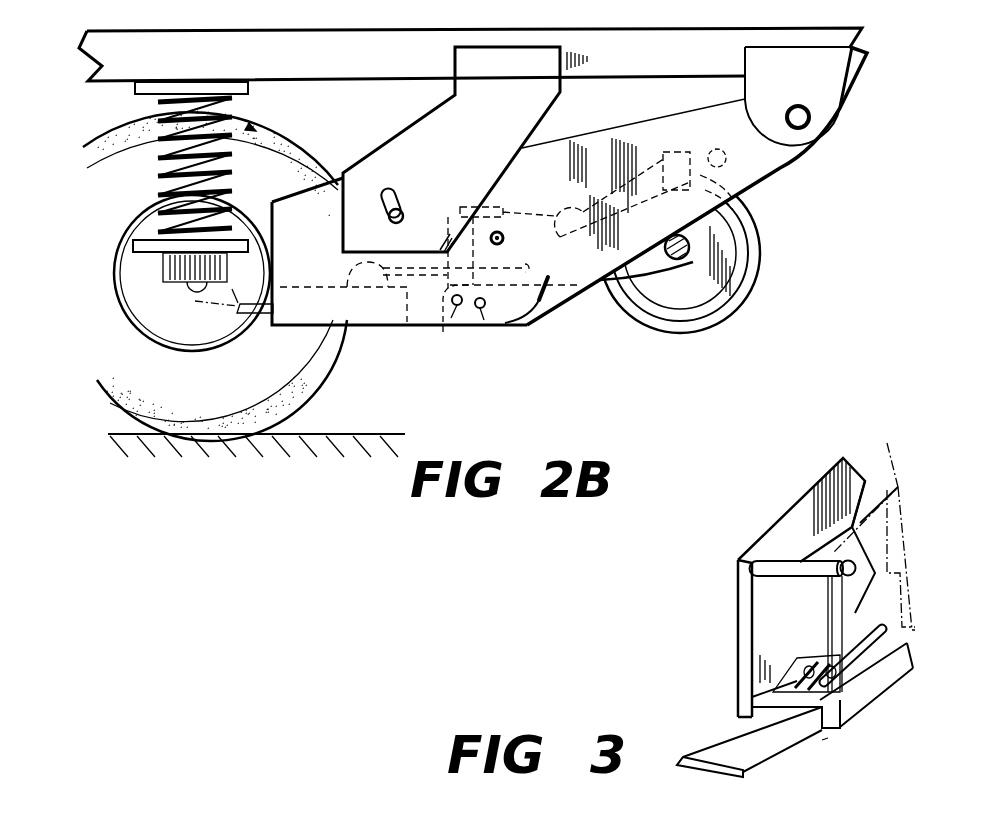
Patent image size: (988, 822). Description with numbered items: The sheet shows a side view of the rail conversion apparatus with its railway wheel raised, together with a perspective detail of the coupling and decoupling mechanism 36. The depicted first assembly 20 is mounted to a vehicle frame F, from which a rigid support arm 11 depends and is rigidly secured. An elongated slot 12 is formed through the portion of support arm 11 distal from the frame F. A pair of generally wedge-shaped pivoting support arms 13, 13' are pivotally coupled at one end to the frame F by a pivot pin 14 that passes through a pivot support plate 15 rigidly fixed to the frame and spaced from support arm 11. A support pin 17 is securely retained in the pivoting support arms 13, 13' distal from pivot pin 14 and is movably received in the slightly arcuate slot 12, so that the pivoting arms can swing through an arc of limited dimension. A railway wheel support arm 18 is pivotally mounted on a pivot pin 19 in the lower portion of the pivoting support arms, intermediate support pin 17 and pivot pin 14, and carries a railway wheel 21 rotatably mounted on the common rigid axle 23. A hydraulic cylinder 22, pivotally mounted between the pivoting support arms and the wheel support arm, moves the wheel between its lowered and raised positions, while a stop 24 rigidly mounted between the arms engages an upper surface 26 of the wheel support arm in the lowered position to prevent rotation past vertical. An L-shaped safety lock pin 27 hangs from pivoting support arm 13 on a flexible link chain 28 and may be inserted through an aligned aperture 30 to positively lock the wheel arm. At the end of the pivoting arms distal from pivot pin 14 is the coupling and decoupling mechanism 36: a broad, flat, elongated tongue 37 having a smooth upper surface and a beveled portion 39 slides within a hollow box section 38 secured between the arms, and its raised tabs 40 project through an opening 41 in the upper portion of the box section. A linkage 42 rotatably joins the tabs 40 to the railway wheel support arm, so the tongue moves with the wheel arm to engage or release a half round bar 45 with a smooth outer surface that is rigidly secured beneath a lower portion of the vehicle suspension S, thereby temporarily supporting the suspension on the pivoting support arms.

In FIG. 2B, the vehicle frame F is at (748, 29).
In FIG. 2B, the vehicle suspension S is at (135, 163).
In FIG. 2B, the rigid support arm 11 is at (402, 146).
In FIG. 2B, the elongated slot 12 is at (386, 194).
In FIG. 2B, the pivoting support arm 13 is at (694, 186).
In FIG. 3, the pivoting support arm 13 is at (874, 532).
In FIG. 3, the pivoting support arm 13' is at (797, 587).
In FIG. 2B, the pivot pin 14 is at (793, 112).
In FIG. 2B, the pivot support plate 15 is at (810, 82).
In FIG. 2B, the support pin 17 is at (390, 227).
In FIG. 2B, the railway wheel support arm 18 is at (613, 297).
In FIG. 2B, the pivot pin 19 is at (503, 227).
In FIG. 2B, the first assembly 20 is at (450, 410).
In FIG. 2B, the railway wheel 21 is at (661, 307).
In FIG. 2B, the hydraulic cylinder 22 is at (675, 148).
In FIG. 2B, the axle 23 is at (702, 212).
In FIG. 2B, the stop 24 is at (468, 204).
In FIG. 2B, the upper surface 26 is at (440, 333).
In FIG. 2B, the L-shaped safety lock pin 27 is at (541, 318).
In FIG. 2B, the flexible link chain 28 is at (484, 320).
In FIG. 2B, the aligned aperture 30 is at (451, 318).
In FIG. 2B, the coupling and decoupling mechanism 36 is at (215, 276).
In FIG. 3, the coupling and decoupling mechanism 36 is at (820, 752).
In FIG. 2B, the tongue 37 is at (238, 311).
In FIG. 3, the tongue 37 is at (707, 747).
In FIG. 3, the hollow box section 38 is at (738, 710).
In FIG. 2B, the beveled portion 39 is at (234, 298).
In FIG. 3, the beveled portion 39 is at (697, 763).
In FIG. 2B, the raised tabs 40 is at (350, 273).
In FIG. 3, the raised tabs 40 is at (815, 657).
In FIG. 3, the opening 41 is at (870, 690).
In FIG. 2B, the linkage 42 is at (443, 238).
In FIG. 3, the linkage 42 is at (862, 670).
In FIG. 2B, the half round bar 45 is at (193, 296).